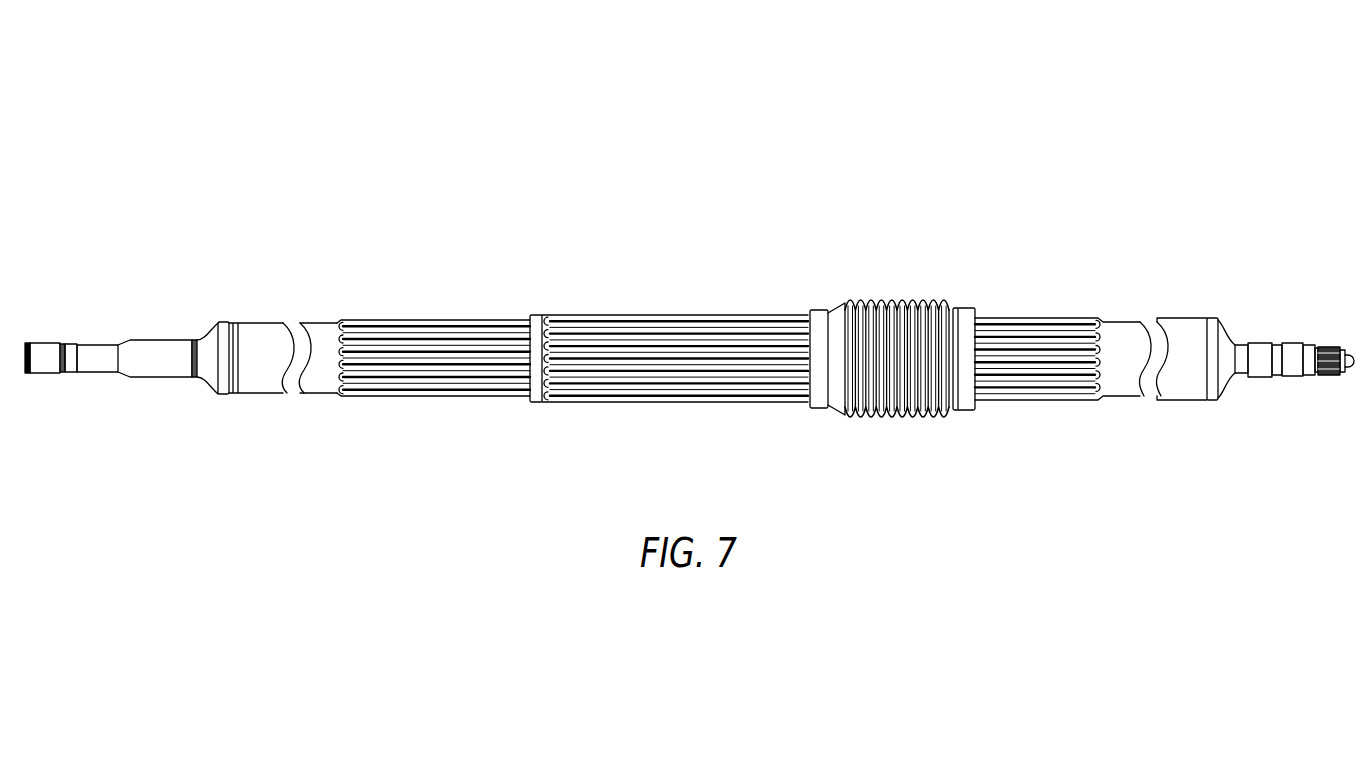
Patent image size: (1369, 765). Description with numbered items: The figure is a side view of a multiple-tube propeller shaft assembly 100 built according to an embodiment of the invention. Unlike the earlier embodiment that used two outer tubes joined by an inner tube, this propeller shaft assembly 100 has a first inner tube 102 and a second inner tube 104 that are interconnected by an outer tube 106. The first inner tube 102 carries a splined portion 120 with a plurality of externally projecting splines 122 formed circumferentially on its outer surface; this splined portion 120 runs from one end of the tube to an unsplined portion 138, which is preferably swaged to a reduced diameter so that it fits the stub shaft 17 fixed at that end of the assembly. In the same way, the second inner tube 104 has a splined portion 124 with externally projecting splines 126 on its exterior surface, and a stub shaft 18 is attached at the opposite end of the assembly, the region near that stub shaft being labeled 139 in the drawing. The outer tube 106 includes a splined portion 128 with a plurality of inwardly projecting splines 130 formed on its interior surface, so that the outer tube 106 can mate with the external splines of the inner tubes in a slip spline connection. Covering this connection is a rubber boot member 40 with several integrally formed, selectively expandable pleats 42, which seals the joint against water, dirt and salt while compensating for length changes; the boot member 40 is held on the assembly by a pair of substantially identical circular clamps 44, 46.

The propeller shaft assembly 100 is at (1117, 128).
The stub shaft 17 is at (1265, 326).
The stub shaft 18 is at (123, 316).
The first shaft body portion 139 is at (260, 320).
The second inner tube 104 is at (386, 283).
The splined portion 124 is at (440, 313).
The externally projecting splines 126 is at (493, 320).
The outer tube 106 is at (657, 285).
The splined portion 128 is at (657, 375).
The inwardly projecting splines 130 is at (705, 373).
The circular clamp 44 is at (820, 309).
The boot member 40 is at (873, 283).
The pleats 42 is at (890, 304).
The circular clamp 46 is at (968, 306).
The splined portion 120 is at (1023, 310).
The externally projecting splines 122 is at (990, 320).
The first inner tube 102 is at (1091, 260).
The unsplined portion 138 is at (1178, 318).